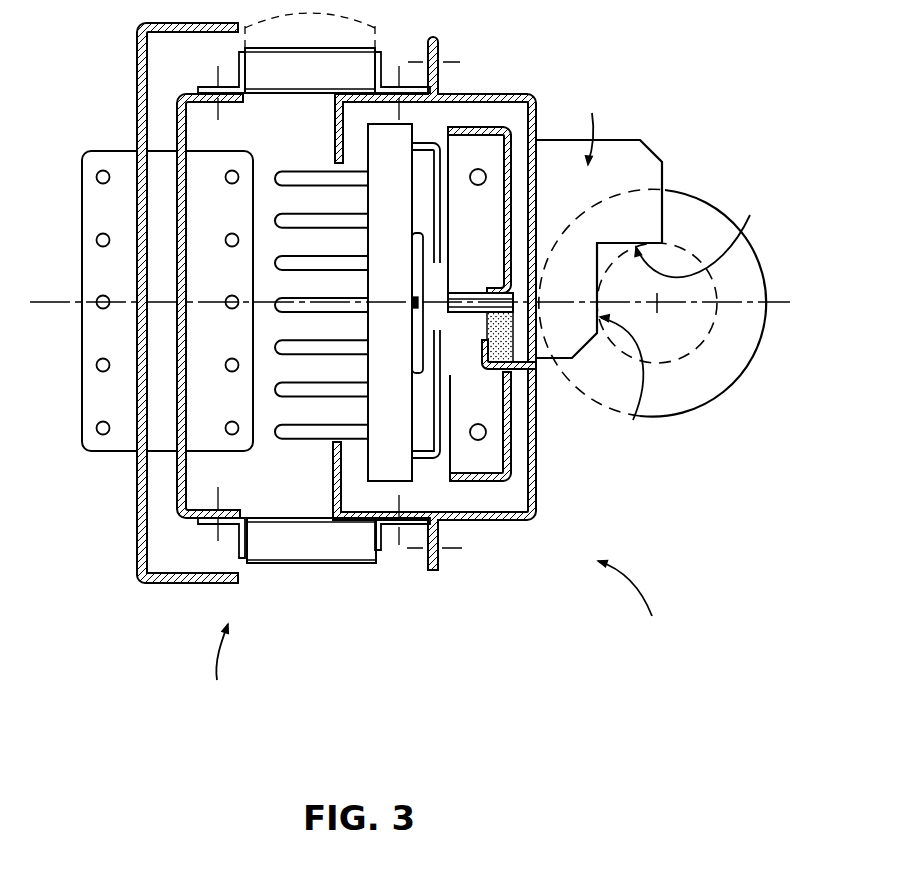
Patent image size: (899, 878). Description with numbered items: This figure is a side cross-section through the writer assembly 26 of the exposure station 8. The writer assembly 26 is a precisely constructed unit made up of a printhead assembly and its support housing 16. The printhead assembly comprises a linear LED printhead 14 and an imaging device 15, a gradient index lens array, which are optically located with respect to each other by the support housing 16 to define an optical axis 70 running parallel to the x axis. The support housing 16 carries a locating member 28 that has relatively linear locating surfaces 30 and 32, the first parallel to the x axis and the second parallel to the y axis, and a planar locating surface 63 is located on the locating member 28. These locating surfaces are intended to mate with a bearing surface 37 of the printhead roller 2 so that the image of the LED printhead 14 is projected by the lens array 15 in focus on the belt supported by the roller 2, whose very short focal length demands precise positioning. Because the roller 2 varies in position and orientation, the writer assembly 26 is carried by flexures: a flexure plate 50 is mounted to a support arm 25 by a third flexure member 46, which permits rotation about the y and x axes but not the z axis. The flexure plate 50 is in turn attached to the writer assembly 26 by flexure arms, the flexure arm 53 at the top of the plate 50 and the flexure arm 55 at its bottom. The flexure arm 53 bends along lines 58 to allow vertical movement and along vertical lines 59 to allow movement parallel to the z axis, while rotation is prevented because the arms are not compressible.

The printhead roller 2 is at (688, 190).
The exposure station 8 is at (633, 600).
The linear LED printhead 14 is at (414, 300).
The imaging device 15 is at (473, 312).
The support housing 16 is at (480, 519).
The support arm 25 is at (182, 583).
The writer assembly 26 is at (219, 665).
The locating member 28 is at (635, 152).
The locating surface 30 is at (703, 235).
The locating surface 32 is at (621, 380).
The bearing surface 37 is at (702, 347).
The third flexure member 46 is at (162, 232).
The flexure plate 50 is at (178, 488).
The flexure arm 53 is at (320, 80).
The flexure arm 55 is at (297, 538).
The bend lines 58 is at (238, 84).
The vertical bend lines 59 is at (310, 52).
The planar locating surface 63 is at (592, 125).
The optical axis 70 is at (72, 300).